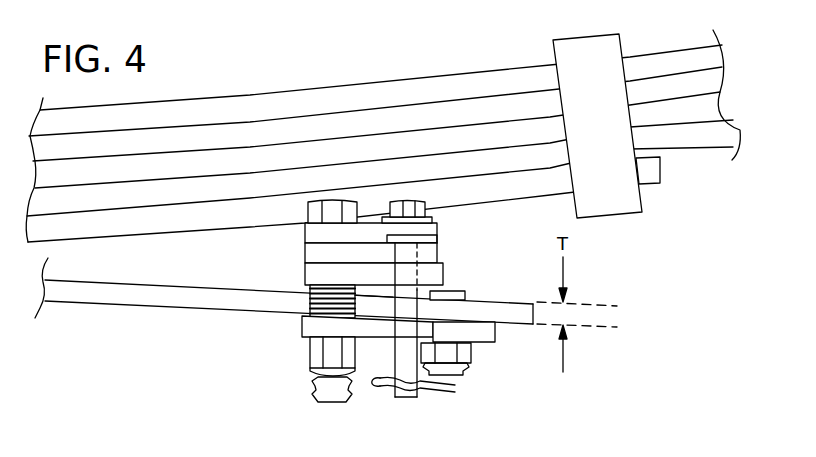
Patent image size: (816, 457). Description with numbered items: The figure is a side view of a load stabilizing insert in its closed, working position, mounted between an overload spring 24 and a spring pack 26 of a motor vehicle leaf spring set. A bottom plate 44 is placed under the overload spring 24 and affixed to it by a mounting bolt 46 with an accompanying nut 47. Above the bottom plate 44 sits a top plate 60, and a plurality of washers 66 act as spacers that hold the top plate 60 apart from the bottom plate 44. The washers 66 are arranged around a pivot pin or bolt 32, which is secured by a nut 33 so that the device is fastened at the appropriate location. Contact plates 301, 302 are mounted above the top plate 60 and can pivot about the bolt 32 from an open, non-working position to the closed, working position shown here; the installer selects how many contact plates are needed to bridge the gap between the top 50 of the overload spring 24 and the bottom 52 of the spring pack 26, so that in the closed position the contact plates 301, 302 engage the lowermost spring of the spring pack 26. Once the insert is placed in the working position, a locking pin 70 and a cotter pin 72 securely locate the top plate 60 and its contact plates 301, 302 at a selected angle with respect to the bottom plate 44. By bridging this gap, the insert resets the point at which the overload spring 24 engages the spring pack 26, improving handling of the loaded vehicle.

The overload spring 24 is at (145, 298).
The spring pack 26 is at (743, 40).
The contact plate 301 is at (303, 228).
The contact plate 302 is at (303, 255).
The pivot pin or bolt 32 is at (332, 210).
The nut 33 is at (310, 353).
The bottom plate 44 is at (470, 330).
The mounting bolt 46 is at (465, 290).
The nut 47 is at (469, 360).
The top of the overload spring 50 is at (158, 287).
The bottom of the spring pack 52 is at (145, 237).
The top plate 60 is at (303, 283).
The washers 66 is at (303, 316).
The locking pin 70 is at (437, 240).
The cotter pin 72 is at (376, 379).